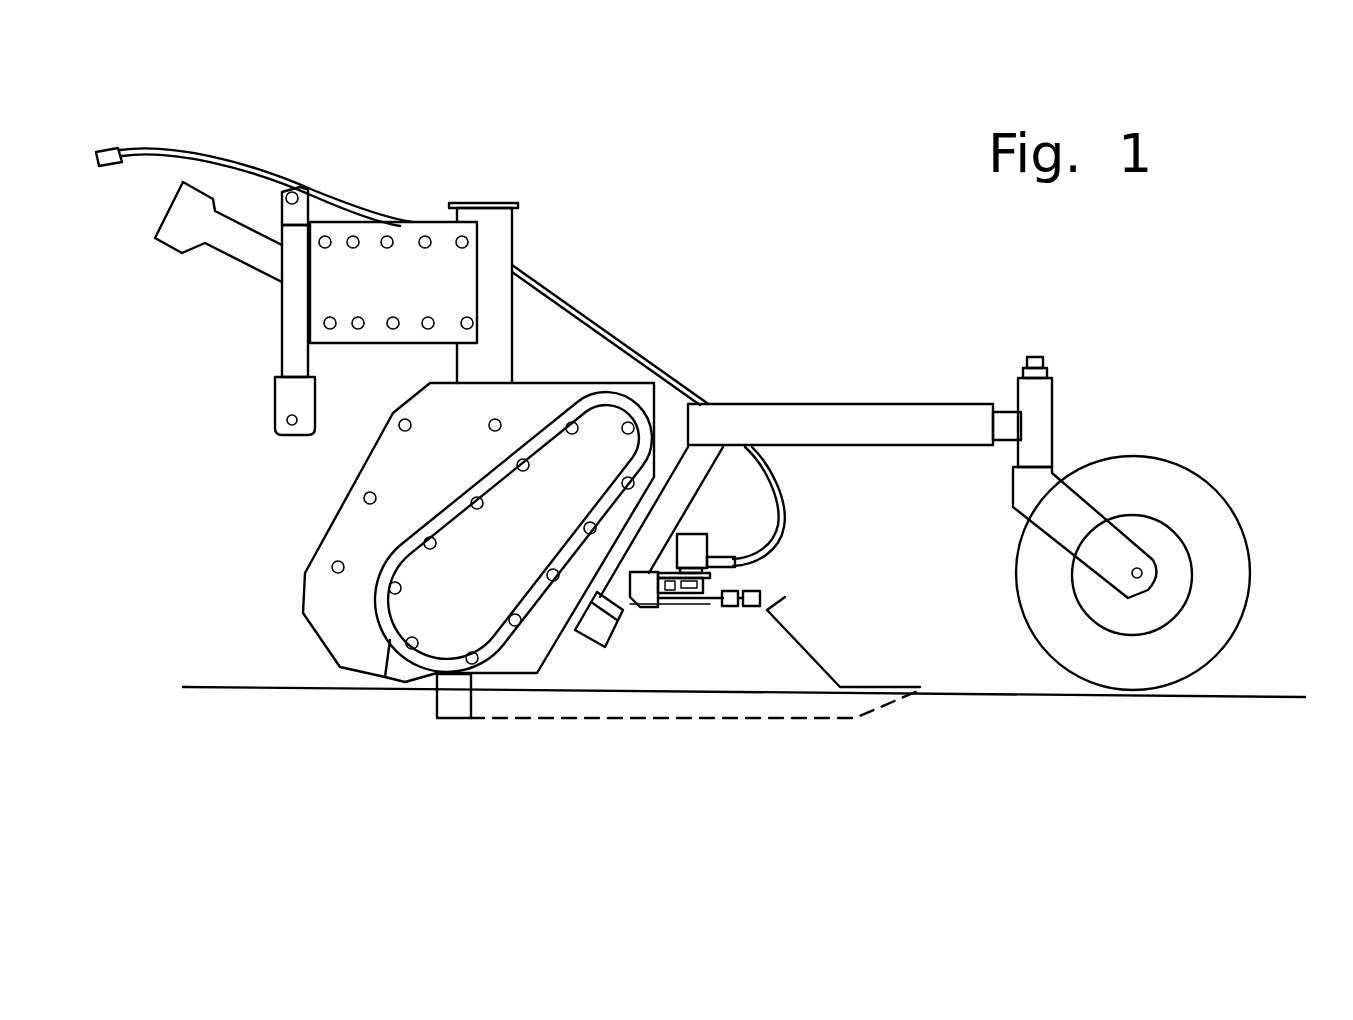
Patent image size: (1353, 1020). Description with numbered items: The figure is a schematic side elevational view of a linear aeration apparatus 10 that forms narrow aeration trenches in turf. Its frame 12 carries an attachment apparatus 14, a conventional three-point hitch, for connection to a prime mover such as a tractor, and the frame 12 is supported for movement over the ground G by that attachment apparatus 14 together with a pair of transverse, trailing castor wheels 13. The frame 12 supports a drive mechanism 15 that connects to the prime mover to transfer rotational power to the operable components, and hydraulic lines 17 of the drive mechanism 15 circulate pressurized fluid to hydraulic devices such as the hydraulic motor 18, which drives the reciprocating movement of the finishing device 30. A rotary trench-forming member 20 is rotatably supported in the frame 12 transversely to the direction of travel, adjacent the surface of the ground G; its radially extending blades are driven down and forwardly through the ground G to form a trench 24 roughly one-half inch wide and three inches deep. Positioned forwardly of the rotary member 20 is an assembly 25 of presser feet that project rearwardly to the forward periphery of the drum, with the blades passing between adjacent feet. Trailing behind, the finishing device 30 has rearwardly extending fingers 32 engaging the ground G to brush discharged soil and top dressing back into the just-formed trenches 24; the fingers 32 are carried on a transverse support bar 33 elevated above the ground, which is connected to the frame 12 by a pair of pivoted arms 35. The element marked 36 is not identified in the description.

The linear aeration apparatus 10 is at (747, 224).
The frame 12 is at (513, 252).
The castor wheels 13 is at (1185, 466).
The attachment apparatus 14 is at (273, 398).
The drive mechanism 15 is at (217, 207).
The hydraulic lines 17 is at (350, 188).
The hydraulic motor 18 is at (690, 533).
The rotary trench-forming member 20 is at (290, 637).
The trench 24 is at (653, 718).
The assembly of presser feet 25 is at (352, 707).
The finishing device 30 is at (842, 573).
The fingers 32 is at (890, 687).
The support bar 33 is at (770, 610).
The pivoted arms 35 is at (681, 605).
The rod 36 is at (730, 580).
The ground G is at (1248, 695).